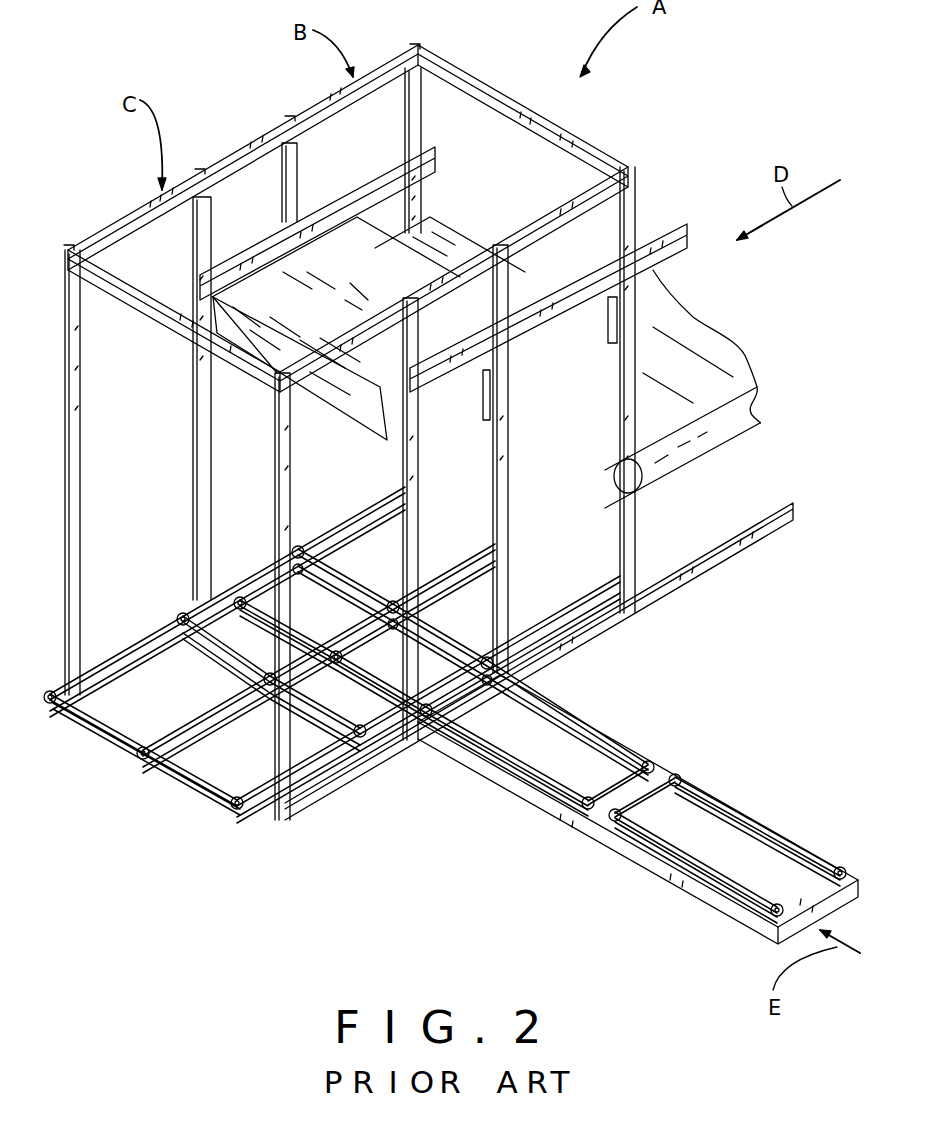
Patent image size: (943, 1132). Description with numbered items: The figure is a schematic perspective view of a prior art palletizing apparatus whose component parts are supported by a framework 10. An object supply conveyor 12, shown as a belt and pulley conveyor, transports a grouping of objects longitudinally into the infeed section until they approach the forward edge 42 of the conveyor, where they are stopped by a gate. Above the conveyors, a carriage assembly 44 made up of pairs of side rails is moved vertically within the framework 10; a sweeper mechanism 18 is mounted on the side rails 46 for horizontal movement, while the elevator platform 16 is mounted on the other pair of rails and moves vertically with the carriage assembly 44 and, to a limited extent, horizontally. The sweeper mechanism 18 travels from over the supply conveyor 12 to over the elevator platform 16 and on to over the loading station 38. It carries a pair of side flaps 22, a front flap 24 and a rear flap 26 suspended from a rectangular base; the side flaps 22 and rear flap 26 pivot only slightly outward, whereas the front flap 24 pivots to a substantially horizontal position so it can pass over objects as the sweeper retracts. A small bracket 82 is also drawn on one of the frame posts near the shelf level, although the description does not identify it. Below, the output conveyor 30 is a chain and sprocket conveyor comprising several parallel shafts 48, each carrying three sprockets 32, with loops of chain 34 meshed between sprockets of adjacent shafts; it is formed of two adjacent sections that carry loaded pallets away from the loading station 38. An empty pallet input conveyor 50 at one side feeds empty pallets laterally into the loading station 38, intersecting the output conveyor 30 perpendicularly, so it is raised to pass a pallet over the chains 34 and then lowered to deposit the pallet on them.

The framework 10 is at (130, 233).
The object supply conveyor 12 is at (687, 333).
The elevator platform 16 is at (433, 233).
The sweeper mechanism 18 is at (287, 277).
The side flaps 22 is at (577, 377).
The front flap 24 is at (248, 332).
The rear flap 26 is at (512, 316).
The output conveyor 30 is at (115, 640).
The sprockets 32 is at (50, 705).
The chains 34 is at (62, 693).
The loading station 38 is at (240, 567).
The forward edge 42 is at (620, 617).
The carriage assembly 44 is at (497, 197).
The side rails 46 is at (317, 110).
The shafts 48 is at (193, 777).
The empty pallet input conveyor 50 is at (723, 787).
The mounting bracket 82 is at (484, 415).